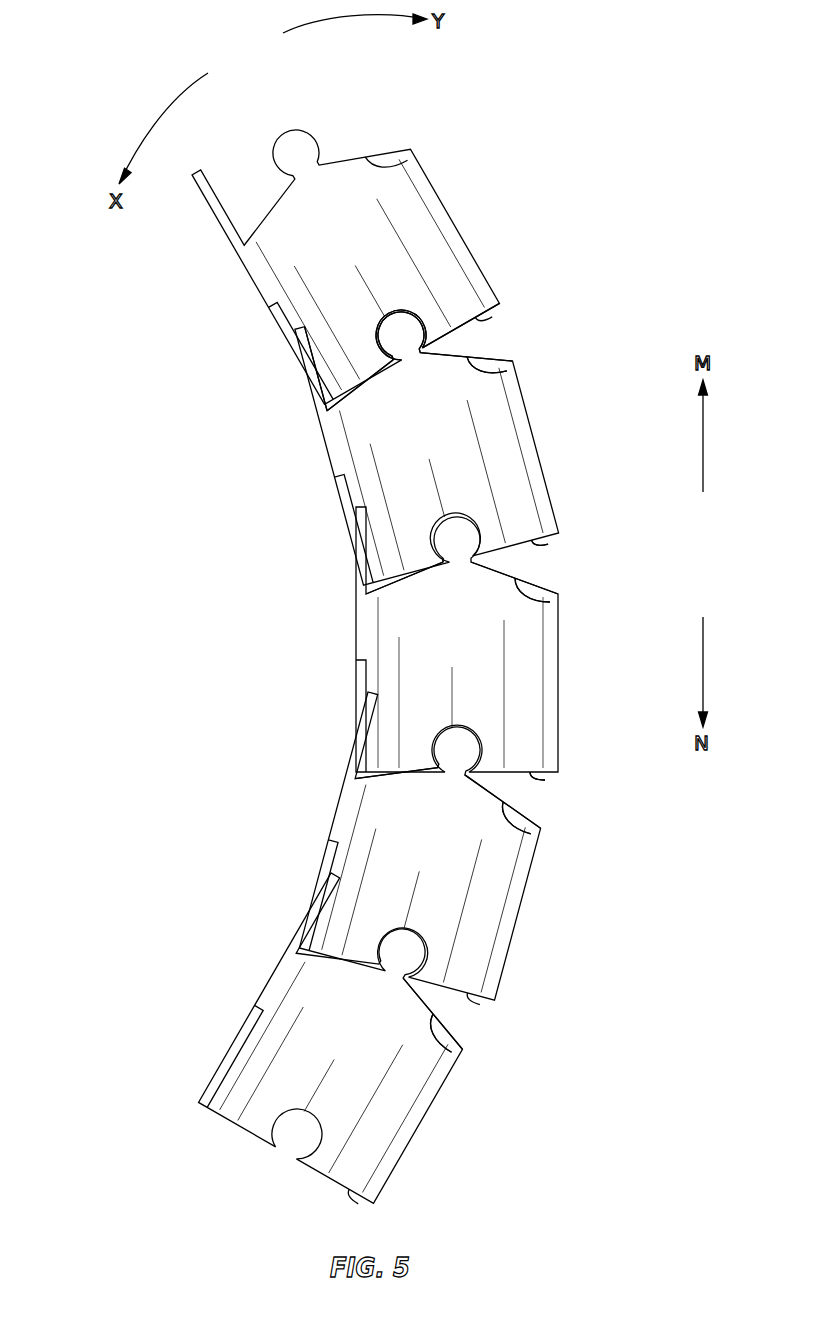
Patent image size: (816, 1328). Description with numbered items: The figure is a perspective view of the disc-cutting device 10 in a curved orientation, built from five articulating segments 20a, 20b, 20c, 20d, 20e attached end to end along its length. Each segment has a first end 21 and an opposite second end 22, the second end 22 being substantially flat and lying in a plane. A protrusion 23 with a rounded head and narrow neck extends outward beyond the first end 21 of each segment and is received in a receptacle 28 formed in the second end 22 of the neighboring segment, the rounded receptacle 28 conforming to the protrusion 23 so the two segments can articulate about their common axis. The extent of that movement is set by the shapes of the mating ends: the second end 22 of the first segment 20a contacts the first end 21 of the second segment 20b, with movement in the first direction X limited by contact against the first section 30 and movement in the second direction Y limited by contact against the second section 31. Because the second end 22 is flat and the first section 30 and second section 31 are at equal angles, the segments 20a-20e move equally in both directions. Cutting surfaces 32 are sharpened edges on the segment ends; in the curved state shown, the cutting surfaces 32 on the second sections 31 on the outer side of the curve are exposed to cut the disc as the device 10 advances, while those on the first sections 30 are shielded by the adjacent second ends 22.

The device 10 is at (336, 642).
The first segment 20a is at (417, 230).
The second segment 20b is at (487, 460).
The third segment 20c is at (483, 677).
The fourth segment 20d is at (490, 907).
The fifth segment 20e is at (373, 1123).
The first end 21 is at (386, 356).
The second end 22 is at (550, 543).
The protrusion 23 is at (420, 325).
The receptacle 28 is at (425, 340).
The first section 30 is at (380, 370).
The second section 31 is at (486, 358).
The cutting surface 32 is at (507, 371).